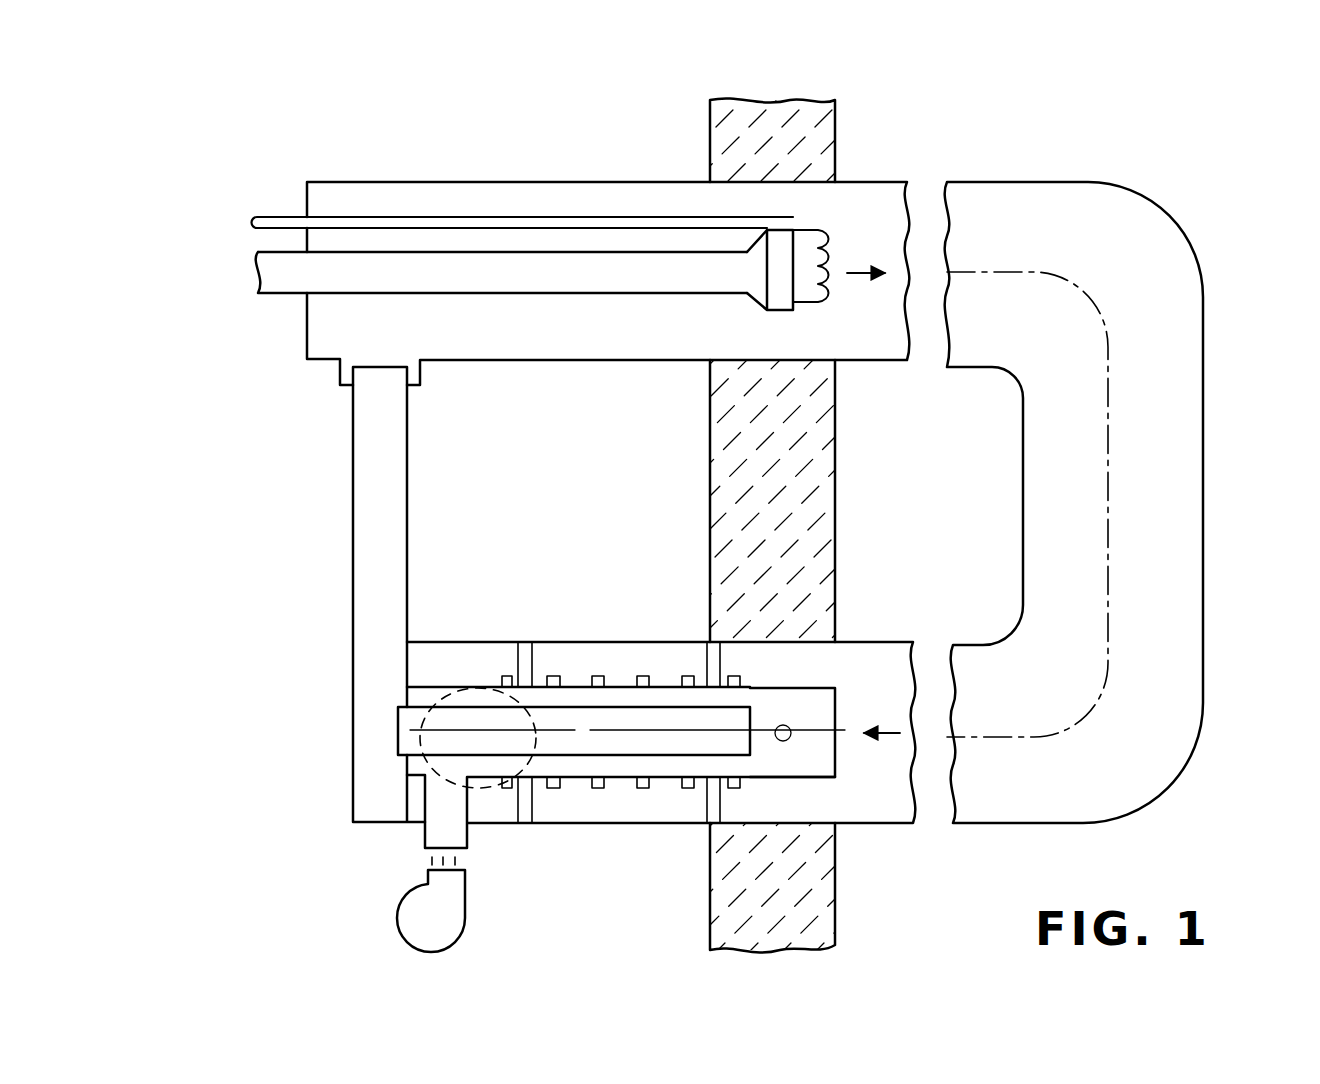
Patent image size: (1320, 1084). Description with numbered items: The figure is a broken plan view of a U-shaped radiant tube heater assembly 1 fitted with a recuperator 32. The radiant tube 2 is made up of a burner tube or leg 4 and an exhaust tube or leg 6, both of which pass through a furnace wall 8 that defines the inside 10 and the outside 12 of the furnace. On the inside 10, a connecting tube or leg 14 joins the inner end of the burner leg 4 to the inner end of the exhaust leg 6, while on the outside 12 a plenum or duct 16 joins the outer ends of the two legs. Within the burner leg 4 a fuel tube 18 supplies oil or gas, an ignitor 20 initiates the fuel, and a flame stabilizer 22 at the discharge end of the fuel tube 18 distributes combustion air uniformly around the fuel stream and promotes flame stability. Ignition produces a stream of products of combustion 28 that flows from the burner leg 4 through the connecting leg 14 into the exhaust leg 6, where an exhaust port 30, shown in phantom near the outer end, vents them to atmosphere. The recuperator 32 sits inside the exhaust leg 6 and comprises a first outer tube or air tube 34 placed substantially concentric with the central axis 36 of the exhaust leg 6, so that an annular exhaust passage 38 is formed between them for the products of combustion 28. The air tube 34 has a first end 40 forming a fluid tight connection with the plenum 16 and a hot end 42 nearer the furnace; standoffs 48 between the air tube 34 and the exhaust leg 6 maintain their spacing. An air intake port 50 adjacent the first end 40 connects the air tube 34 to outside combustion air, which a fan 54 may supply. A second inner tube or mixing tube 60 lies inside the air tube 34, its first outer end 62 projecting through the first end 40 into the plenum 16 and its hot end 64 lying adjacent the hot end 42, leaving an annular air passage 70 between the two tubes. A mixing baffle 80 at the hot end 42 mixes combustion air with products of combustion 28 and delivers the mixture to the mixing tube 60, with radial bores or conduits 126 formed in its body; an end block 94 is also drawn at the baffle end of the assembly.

The radiant tube heater assembly 1 is at (1188, 188).
The radiant tube 2 is at (1212, 286).
The burner tube or leg 4 is at (875, 195).
The exhaust tube or leg 6 is at (870, 825).
The furnace wall 8 is at (710, 125).
The inside of furnace 10 is at (888, 475).
The outside of furnace 12 is at (219, 519).
The connecting tube or leg 14 is at (1185, 470).
The plenum or duct 16 is at (372, 446).
The fuel tube 18 is at (290, 272).
The ignitor 20 is at (267, 212).
The flame stabilizer 22 is at (775, 281).
The products of combustion 28 is at (1108, 612).
The exhaust port 30 is at (465, 685).
The recuperator 32 is at (498, 802).
The first outer tube or air tube 34 is at (523, 690).
The central axis 36 is at (640, 810).
The annular exhaust passage or first annulus 38 is at (585, 800).
The first end of air tube 40 is at (412, 690).
The second inner or hot end of air tube 42 is at (745, 690).
The standoffs 48 is at (708, 662).
The air intake port 50 is at (440, 817).
The fan 54 is at (420, 915).
The second inner tube or mixing tube 60 is at (620, 715).
The first outer end of mixing tube 62 is at (395, 768).
The second inner or hot end of mixing tube 64 is at (660, 800).
The annular air passage 70 is at (578, 700).
The mixing baffle 80 is at (864, 660).
The end block 94 is at (838, 705).
The radial bores or conduits 126 is at (796, 741).